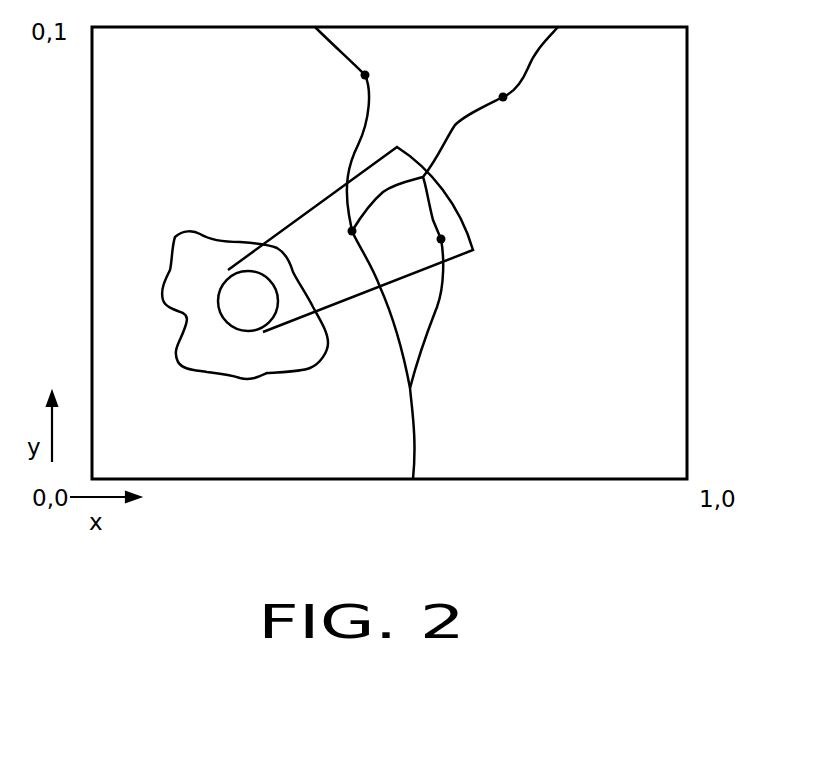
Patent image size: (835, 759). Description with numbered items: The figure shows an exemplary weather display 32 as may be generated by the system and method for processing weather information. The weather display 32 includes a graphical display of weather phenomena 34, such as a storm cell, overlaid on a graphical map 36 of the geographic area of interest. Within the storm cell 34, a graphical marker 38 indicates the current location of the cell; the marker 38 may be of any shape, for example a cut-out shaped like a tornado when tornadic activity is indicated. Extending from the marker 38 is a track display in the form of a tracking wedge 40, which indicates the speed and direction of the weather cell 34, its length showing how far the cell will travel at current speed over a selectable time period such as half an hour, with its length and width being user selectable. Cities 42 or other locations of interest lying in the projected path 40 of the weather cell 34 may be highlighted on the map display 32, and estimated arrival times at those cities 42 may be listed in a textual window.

The weather display 32 is at (687, 408).
The weather phenomena 34 is at (193, 347).
The graphical map 36 is at (657, 233).
The graphical marker 38 is at (230, 292).
The tracking wedge 40 is at (317, 232).
The cities 42 is at (441, 239).